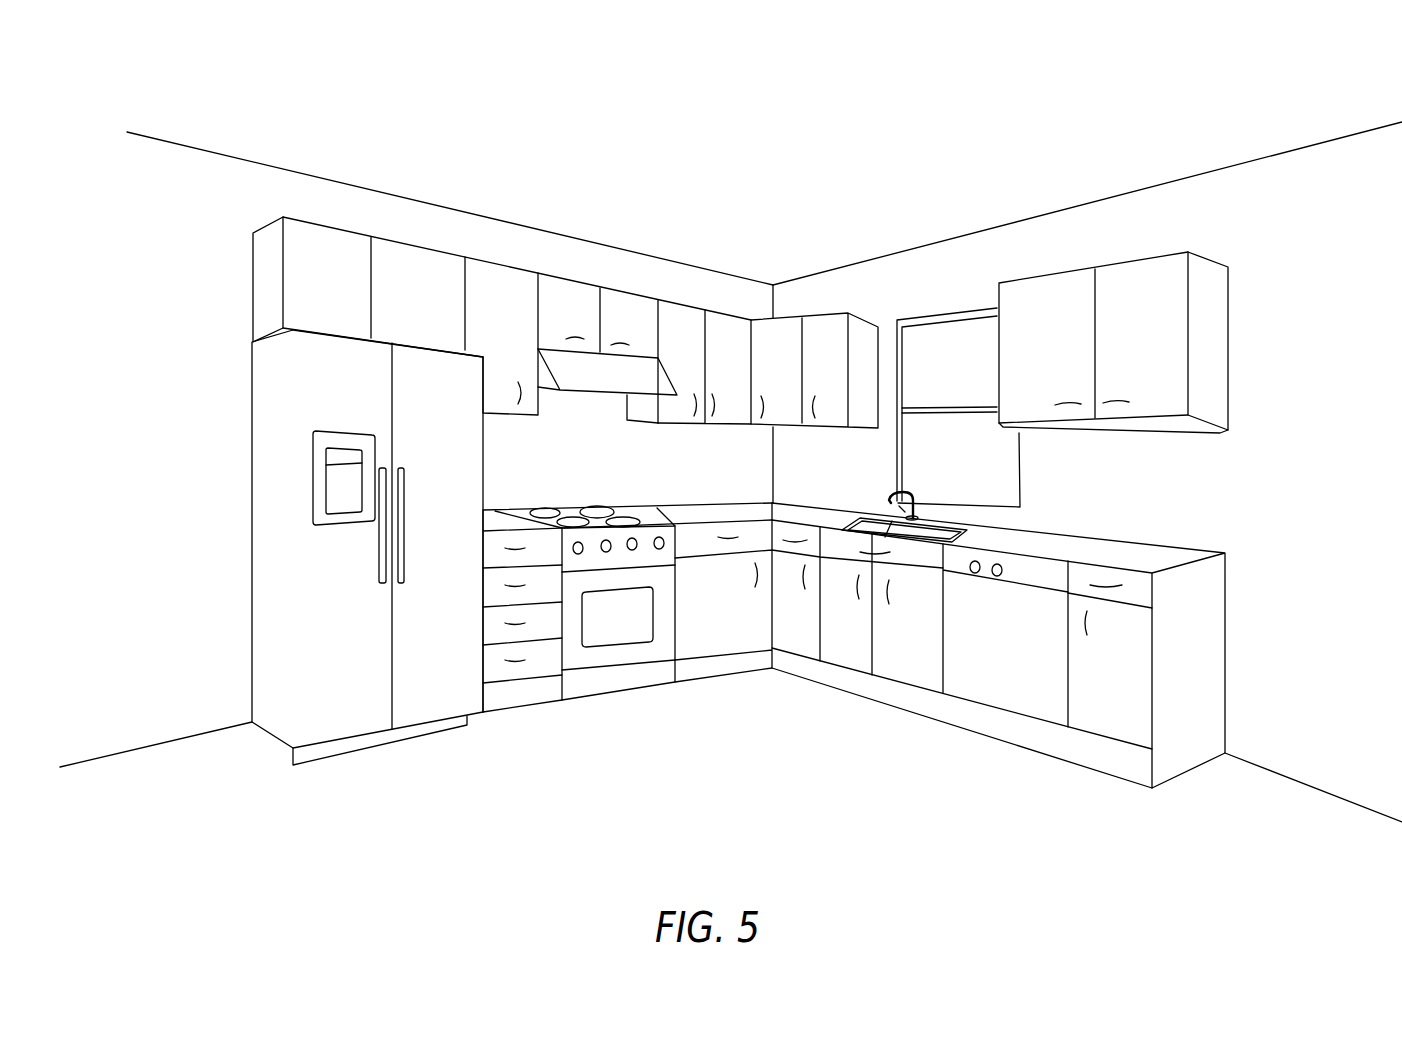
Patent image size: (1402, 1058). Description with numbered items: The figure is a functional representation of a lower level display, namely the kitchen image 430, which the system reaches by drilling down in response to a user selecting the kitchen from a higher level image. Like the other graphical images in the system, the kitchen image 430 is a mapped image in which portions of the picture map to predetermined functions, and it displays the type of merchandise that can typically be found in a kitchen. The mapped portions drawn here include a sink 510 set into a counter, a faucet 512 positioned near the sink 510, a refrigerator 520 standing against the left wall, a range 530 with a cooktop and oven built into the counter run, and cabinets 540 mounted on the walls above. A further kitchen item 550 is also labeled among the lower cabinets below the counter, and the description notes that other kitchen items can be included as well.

The kitchen image 430 is at (704, 168).
The sink 510 is at (878, 518).
The faucet 512 is at (905, 497).
The refrigerator 520 is at (313, 560).
The range 530 is at (570, 512).
The cabinets 540 is at (1208, 338).
The dishwasher 550 is at (990, 683).